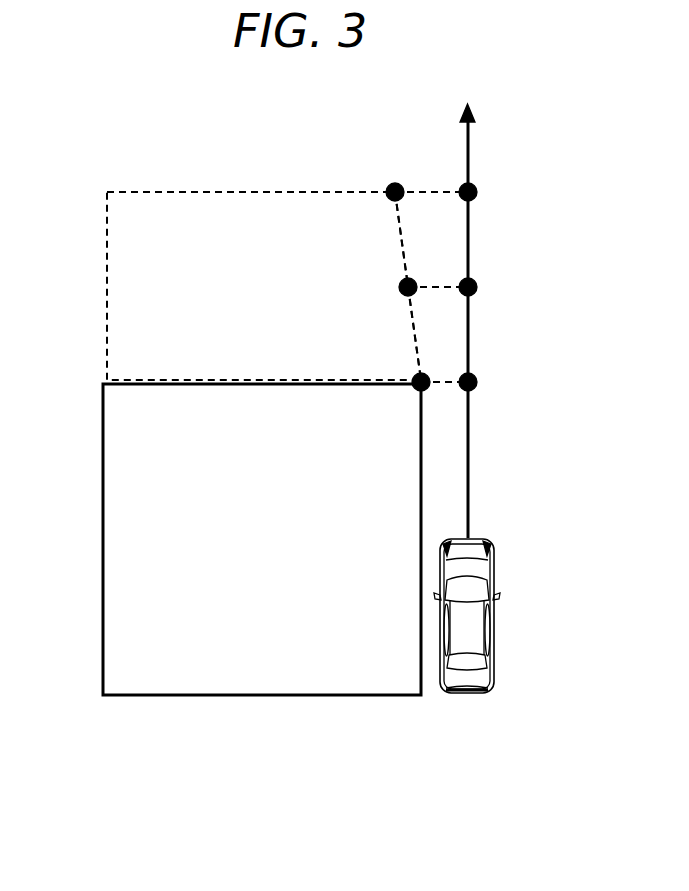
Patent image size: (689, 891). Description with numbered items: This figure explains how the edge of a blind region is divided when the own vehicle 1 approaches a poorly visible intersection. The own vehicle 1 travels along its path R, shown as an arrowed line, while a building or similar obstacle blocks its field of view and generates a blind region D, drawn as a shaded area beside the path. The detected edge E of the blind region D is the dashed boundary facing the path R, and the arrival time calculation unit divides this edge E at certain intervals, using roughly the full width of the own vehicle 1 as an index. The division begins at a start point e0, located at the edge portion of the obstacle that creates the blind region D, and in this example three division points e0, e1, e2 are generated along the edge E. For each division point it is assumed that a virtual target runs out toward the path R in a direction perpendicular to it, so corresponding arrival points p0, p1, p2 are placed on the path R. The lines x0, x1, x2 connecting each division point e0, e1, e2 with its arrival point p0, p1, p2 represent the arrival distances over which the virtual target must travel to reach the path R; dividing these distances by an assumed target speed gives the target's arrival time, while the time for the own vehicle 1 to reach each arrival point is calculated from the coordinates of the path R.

The own vehicle 1 is at (470, 680).
The path R is at (470, 487).
The blind region D is at (125, 281).
The edge E is at (413, 326).
The division point e0 is at (415, 375).
The division point e1 is at (402, 283).
The division point e2 is at (391, 186).
The arrival point p0 is at (480, 376).
The arrival point p1 is at (478, 284).
The arrival point p2 is at (478, 189).
The arrival distance x0 is at (444, 369).
The arrival distance x1 is at (438, 274).
The arrival distance x2 is at (431, 179).